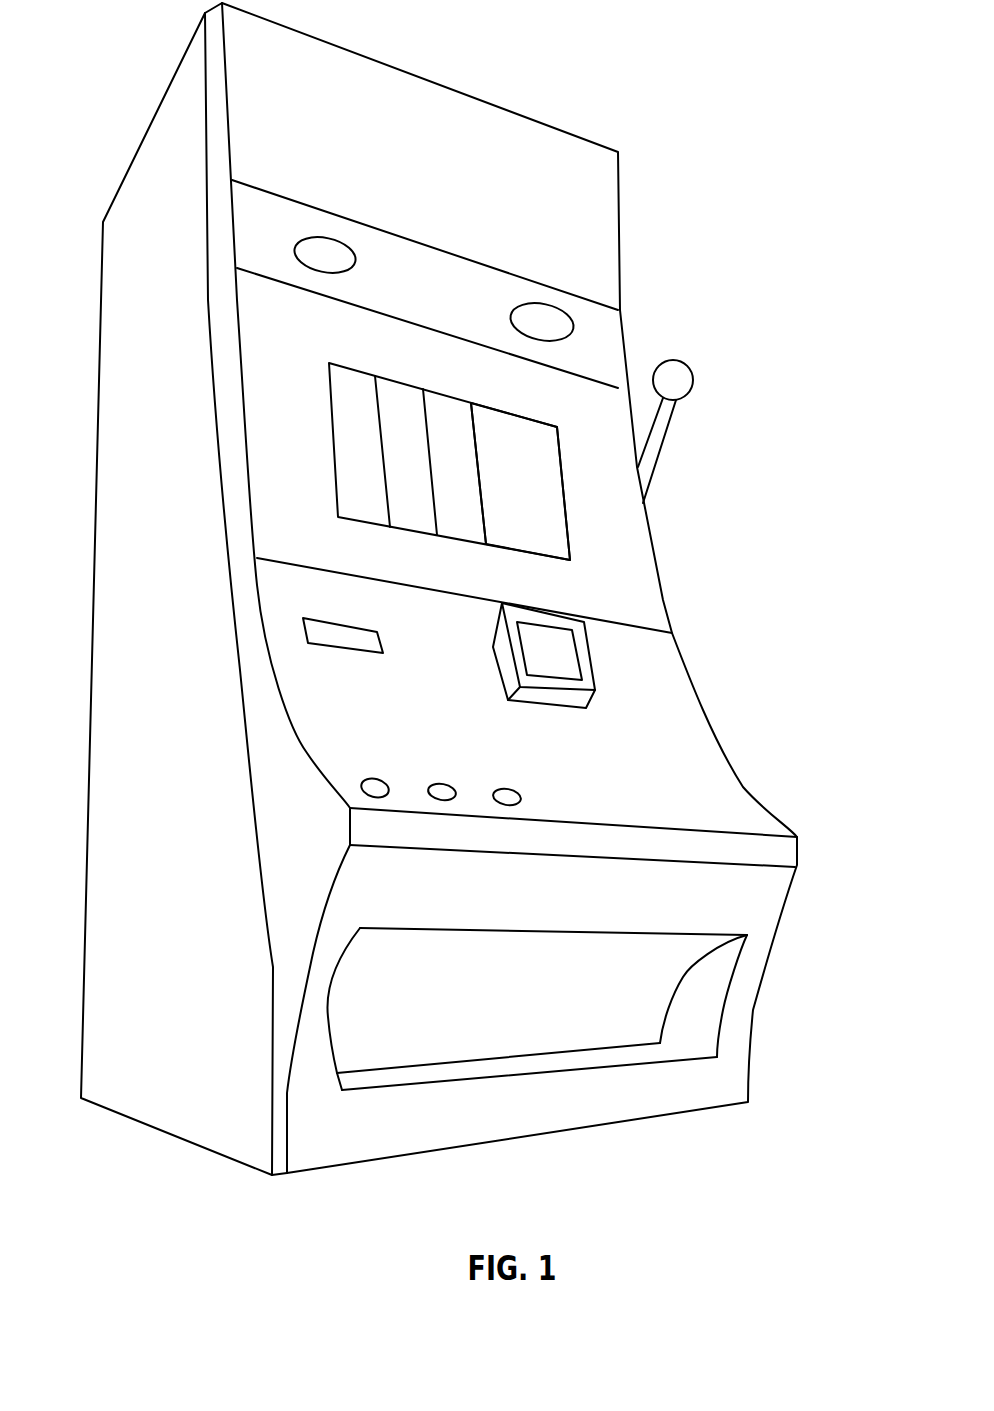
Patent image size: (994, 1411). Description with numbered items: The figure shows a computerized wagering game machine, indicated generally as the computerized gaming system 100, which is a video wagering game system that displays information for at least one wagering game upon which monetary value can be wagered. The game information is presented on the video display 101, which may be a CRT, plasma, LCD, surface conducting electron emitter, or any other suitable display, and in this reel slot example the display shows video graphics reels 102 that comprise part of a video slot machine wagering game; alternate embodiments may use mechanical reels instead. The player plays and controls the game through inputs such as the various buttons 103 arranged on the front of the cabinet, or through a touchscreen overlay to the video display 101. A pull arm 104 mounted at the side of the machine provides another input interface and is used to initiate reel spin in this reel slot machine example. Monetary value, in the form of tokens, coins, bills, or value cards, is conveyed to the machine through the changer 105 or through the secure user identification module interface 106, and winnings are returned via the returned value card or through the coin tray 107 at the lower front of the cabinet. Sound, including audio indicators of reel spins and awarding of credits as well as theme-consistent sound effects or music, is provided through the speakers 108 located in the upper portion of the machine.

The computerized gaming system 100 is at (665, 63).
The video display 101 is at (329, 443).
The video graphics reels 102 is at (547, 513).
The buttons 103 is at (503, 793).
The pull arm 104 is at (693, 378).
The changer 105 is at (373, 643).
The secure user identification module interface 106 is at (583, 660).
The coin tray 107 is at (698, 1007).
The speakers 108 is at (343, 257).